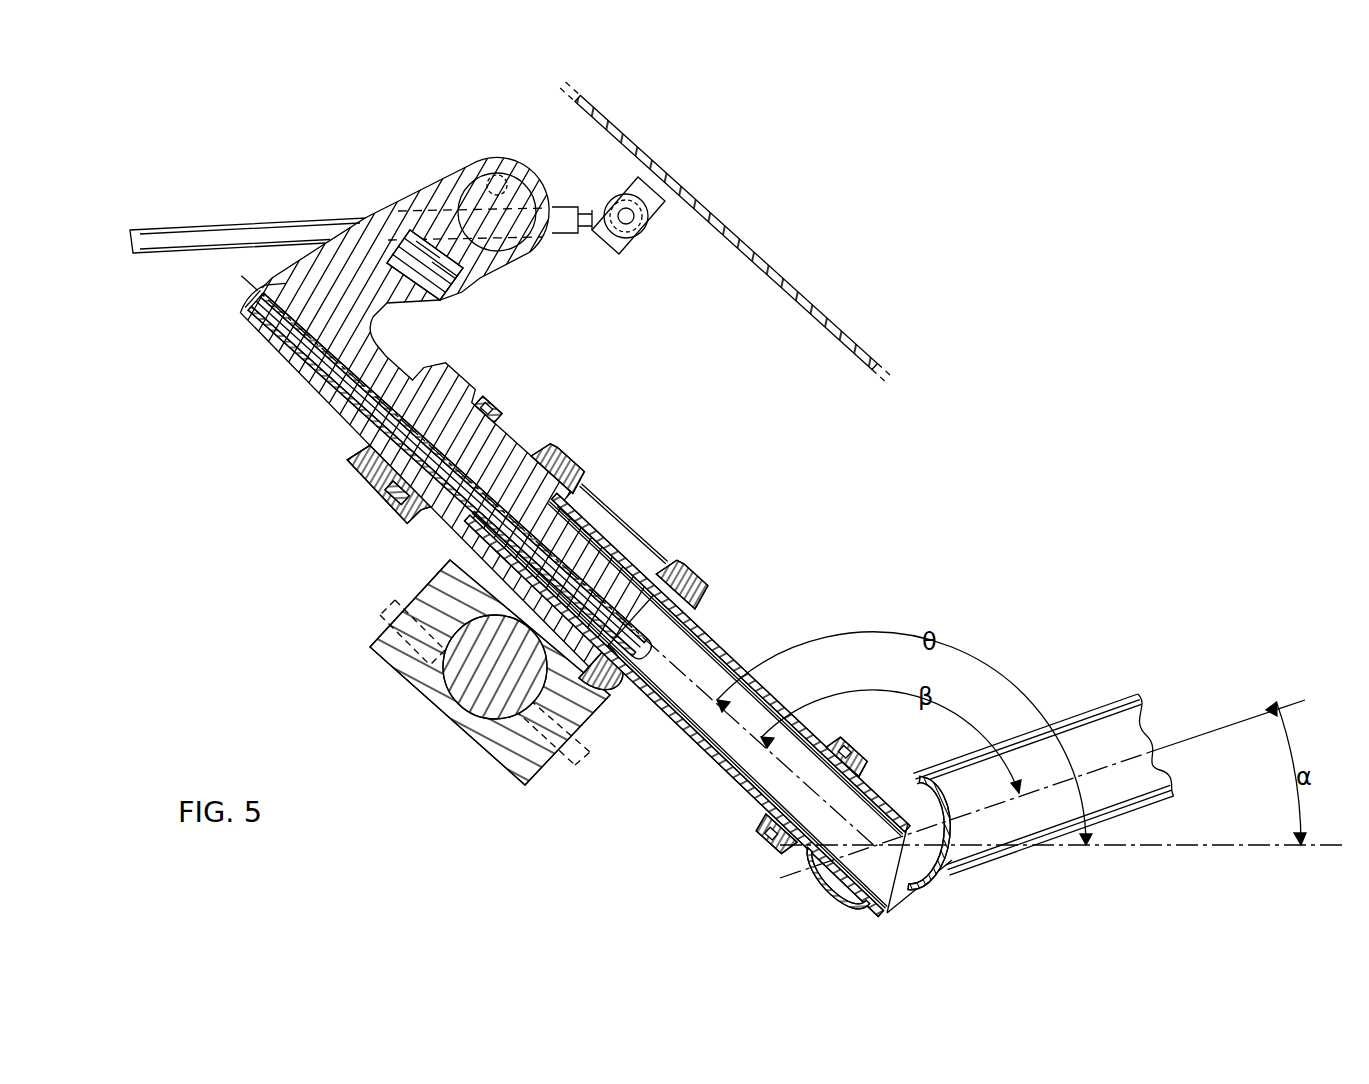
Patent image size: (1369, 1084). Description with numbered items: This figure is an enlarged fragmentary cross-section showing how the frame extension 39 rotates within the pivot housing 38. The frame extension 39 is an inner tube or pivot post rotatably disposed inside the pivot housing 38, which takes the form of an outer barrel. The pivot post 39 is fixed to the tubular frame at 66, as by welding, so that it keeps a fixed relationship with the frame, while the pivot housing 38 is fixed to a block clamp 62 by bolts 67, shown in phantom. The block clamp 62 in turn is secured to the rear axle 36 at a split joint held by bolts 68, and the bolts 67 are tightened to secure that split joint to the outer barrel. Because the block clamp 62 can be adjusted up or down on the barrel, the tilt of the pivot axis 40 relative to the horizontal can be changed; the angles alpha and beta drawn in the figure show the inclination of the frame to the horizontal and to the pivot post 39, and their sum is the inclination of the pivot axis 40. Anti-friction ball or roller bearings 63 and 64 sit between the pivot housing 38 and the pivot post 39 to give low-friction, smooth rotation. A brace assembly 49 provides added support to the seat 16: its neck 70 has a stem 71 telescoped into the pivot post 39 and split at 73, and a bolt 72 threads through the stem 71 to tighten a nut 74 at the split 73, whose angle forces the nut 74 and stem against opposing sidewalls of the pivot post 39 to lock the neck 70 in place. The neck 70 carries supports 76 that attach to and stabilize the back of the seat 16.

The seat 16 is at (768, 272).
The rear axle 36 is at (477, 693).
The pivot housing 38 is at (722, 645).
The frame extension 39 is at (703, 758).
The pivot axis 40 is at (767, 801).
The brace assembly 49 is at (460, 170).
The block clamp 62 is at (433, 570).
The anti-friction bearing 63 is at (489, 418).
The anti-friction bearing 64 is at (845, 754).
The weld location 66 is at (872, 912).
The bolts 67 is at (562, 467).
The bolts 68 is at (380, 670).
The neck 70 is at (374, 318).
The stem 71 is at (392, 459).
The bolt 72 is at (330, 367).
The split 73 is at (620, 553).
The nut 74 is at (605, 645).
The supports 76 is at (183, 232).